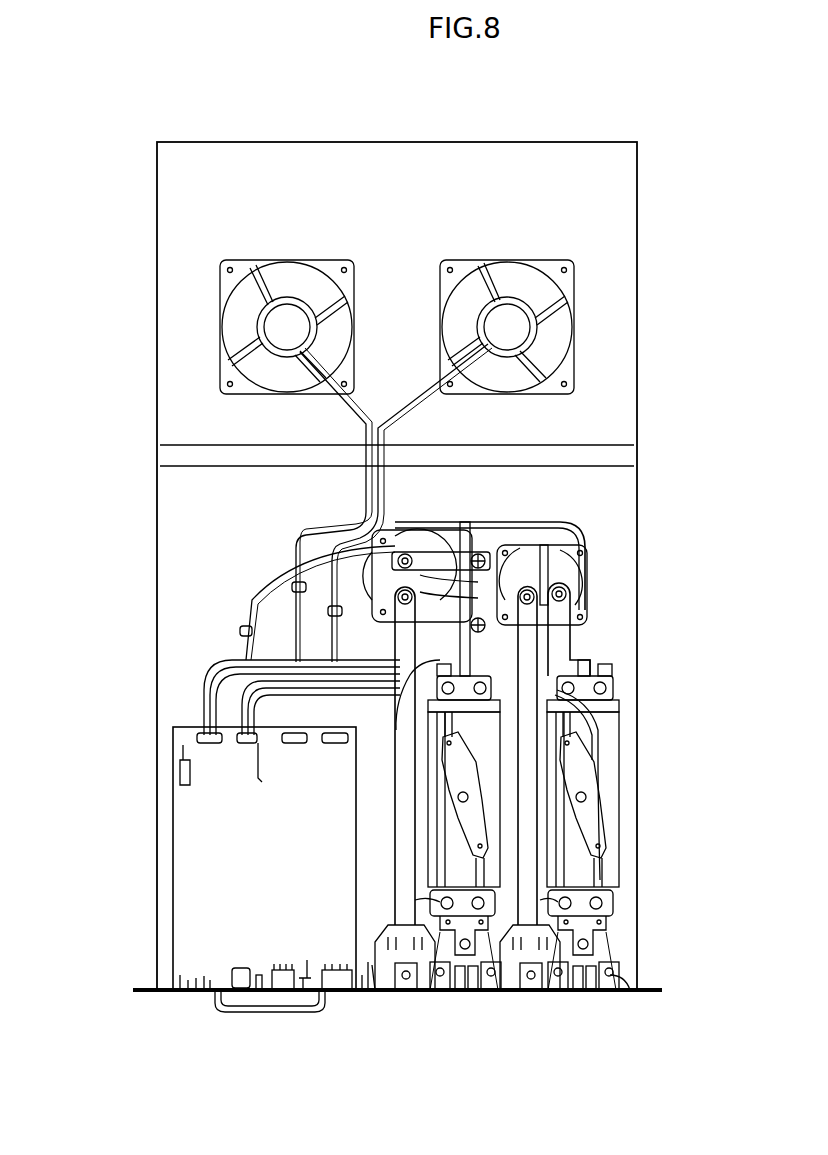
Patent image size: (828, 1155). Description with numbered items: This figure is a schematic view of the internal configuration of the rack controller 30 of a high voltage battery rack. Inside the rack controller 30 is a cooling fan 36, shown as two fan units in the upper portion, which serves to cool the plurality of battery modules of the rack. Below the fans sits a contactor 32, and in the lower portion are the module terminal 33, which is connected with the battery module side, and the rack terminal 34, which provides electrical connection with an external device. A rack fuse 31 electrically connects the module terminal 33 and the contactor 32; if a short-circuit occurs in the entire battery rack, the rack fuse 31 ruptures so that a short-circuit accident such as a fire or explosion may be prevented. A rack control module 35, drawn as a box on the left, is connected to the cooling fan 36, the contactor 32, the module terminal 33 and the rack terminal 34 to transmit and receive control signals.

The rack controller 30 is at (70, 103).
The rack fuse 31 is at (463, 757).
The contactor 32 is at (408, 522).
The module terminal 33 is at (587, 992).
The rack terminal 34 is at (563, 992).
The rack control module 35 is at (190, 872).
The cooling fan 36 is at (292, 308).